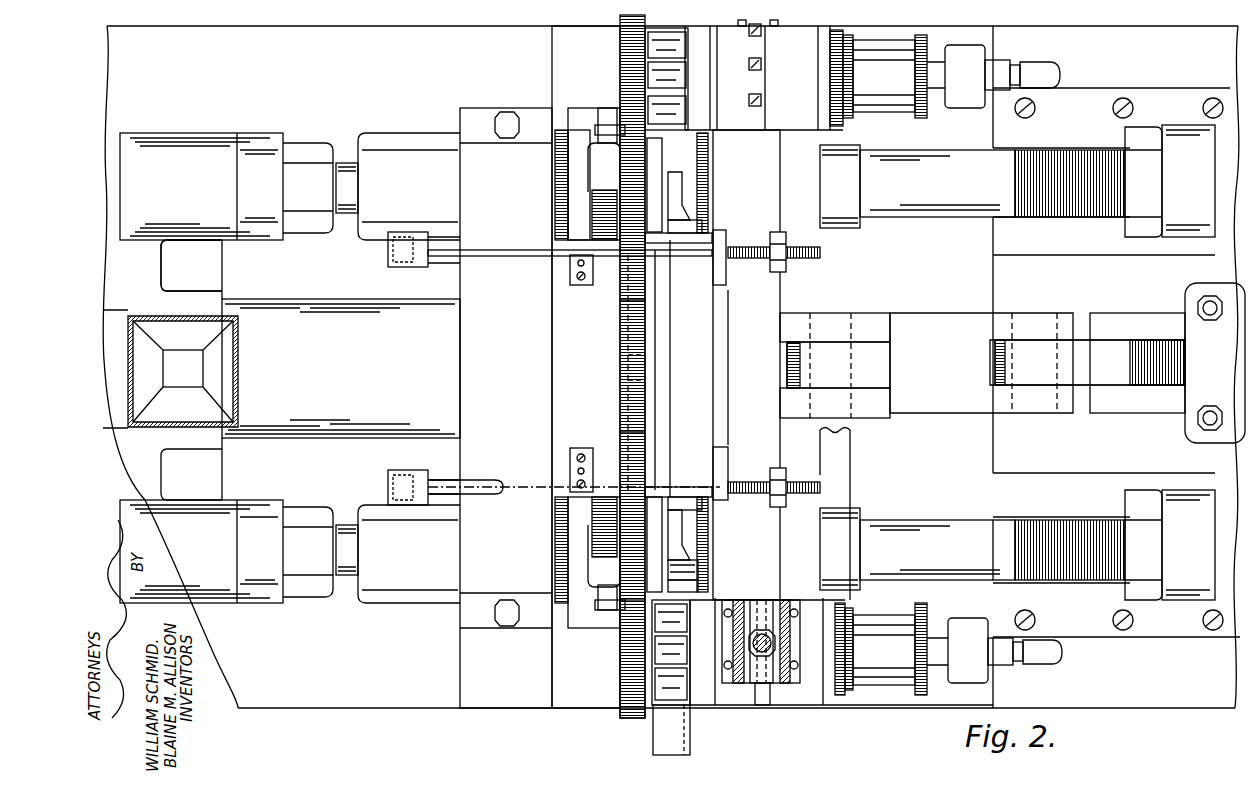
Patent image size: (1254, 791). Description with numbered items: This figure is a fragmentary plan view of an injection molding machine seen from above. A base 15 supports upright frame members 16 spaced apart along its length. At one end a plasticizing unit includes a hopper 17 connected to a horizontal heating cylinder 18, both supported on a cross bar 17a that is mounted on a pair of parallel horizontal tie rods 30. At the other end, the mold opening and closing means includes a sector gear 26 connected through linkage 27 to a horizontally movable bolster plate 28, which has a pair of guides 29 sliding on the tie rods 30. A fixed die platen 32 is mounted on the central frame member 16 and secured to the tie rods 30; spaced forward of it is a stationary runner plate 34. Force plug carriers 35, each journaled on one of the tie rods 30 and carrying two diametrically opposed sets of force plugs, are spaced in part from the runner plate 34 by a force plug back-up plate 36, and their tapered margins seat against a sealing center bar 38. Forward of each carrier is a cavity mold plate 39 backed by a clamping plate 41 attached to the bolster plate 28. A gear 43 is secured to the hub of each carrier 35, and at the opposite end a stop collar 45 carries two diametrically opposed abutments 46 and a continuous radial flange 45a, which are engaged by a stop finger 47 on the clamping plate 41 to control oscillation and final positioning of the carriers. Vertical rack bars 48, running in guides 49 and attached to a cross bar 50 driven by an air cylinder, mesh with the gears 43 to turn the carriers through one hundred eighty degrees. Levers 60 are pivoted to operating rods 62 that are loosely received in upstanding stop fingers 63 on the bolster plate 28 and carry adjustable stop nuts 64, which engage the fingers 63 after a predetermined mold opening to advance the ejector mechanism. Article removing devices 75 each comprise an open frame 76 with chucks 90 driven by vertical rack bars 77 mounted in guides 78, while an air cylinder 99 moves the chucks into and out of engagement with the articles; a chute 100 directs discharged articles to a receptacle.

The base 15 is at (378, 71).
The upright frame members 16 is at (472, 661).
The hopper 17 is at (190, 411).
The cross bar 17a is at (212, 265).
The heating cylinder 18 is at (362, 351).
The sector gear 26 is at (1150, 348).
The linkage 27 is at (965, 315).
The bolster plate 28 is at (790, 299).
The guides 29 is at (850, 153).
The tie rods 30 is at (347, 163).
The fixed die platen 32 is at (517, 356).
The runner plate 34 is at (599, 361).
The force plug carriers 35 is at (645, 280).
The force plug back-up plate 36 is at (624, 712).
The sealing center bar 38 is at (640, 402).
The cavity mold plate 39 is at (658, 333).
The clamping plate 41 is at (702, 356).
The gear 43 is at (559, 130).
The stop collar 45 is at (690, 573).
The radial flange 45a is at (690, 586).
The abutments 46 is at (676, 185).
The stop finger 47 is at (674, 186).
The rack bars 48 is at (601, 125).
The guides 49 is at (575, 181).
The cross bar 50 is at (602, 153).
The levers 60 is at (392, 253).
The operating rods 62 is at (532, 257).
The stop fingers 63 is at (720, 272).
The stop nuts 64 is at (782, 180).
The article removing devices 75 is at (778, 598).
The open frame 76 is at (799, 22).
The rack bars 77 is at (764, 98).
The guides 78 is at (756, 24).
The chuck 90 is at (672, 110).
The air cylinder 99 is at (878, 50).
The chute 100 is at (690, 741).